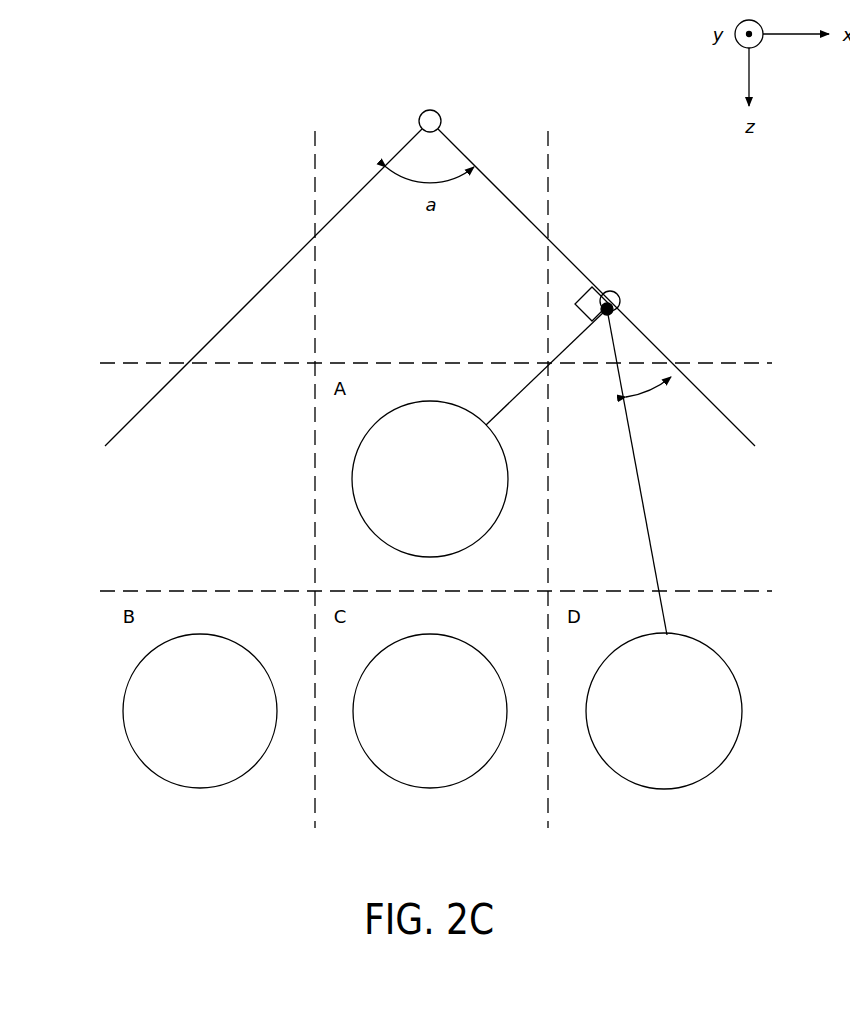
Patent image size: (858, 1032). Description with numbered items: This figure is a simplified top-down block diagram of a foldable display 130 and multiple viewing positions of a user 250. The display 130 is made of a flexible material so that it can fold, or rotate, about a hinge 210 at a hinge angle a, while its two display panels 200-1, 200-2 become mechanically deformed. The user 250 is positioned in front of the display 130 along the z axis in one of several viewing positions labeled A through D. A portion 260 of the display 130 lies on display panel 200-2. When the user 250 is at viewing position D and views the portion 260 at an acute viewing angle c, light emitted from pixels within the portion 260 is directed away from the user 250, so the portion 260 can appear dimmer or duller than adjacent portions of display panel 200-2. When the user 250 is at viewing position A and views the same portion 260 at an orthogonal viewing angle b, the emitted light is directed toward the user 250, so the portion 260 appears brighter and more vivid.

The display 130 is at (141, 129).
The hinge 210 is at (430, 109).
The display panel 200-1 is at (216, 249).
The display panel 200-2 is at (593, 249).
The user 250 is at (432, 595).
The portion of display 260 is at (578, 461).